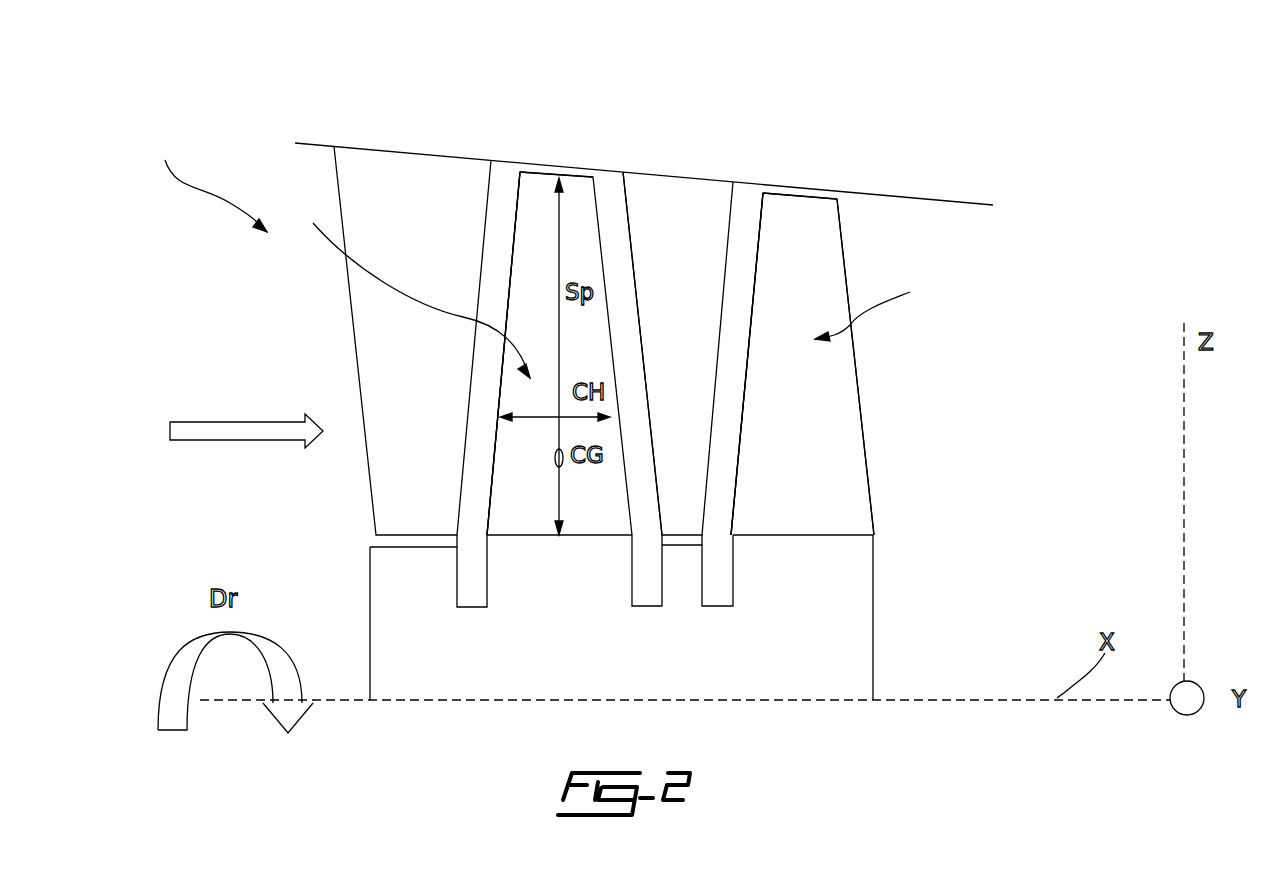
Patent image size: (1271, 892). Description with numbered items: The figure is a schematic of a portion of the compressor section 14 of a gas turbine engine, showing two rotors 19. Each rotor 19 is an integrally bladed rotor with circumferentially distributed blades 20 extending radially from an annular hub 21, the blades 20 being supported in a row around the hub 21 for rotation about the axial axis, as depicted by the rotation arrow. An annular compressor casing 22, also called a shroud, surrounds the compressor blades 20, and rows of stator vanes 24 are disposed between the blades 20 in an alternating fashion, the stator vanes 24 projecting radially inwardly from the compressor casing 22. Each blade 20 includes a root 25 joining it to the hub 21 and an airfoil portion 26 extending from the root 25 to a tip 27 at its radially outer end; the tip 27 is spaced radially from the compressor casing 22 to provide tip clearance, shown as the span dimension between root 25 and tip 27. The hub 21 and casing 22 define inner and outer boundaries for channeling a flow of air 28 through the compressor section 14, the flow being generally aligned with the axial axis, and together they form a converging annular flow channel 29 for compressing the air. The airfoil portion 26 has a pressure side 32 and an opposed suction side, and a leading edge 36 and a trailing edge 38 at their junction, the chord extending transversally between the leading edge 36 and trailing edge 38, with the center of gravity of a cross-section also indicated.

The compressor section 14 is at (204, 183).
The rotor 19 is at (617, 289).
The blade 20 is at (507, 453).
The annular hub 21 is at (825, 630).
The compressor casing 22 is at (323, 143).
The stator vane 24 is at (408, 209).
The root 25 is at (549, 570).
The airfoil portion 26 is at (528, 237).
The tip 27 is at (548, 172).
The flow of air 28 is at (238, 422).
The converging annular flow channel 29 is at (945, 425).
The pressure side 32 is at (790, 480).
The leading edge 36 is at (493, 395).
The trailing edge 38 is at (627, 233).